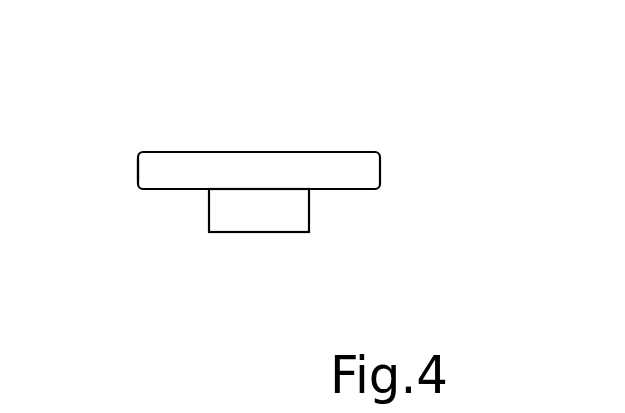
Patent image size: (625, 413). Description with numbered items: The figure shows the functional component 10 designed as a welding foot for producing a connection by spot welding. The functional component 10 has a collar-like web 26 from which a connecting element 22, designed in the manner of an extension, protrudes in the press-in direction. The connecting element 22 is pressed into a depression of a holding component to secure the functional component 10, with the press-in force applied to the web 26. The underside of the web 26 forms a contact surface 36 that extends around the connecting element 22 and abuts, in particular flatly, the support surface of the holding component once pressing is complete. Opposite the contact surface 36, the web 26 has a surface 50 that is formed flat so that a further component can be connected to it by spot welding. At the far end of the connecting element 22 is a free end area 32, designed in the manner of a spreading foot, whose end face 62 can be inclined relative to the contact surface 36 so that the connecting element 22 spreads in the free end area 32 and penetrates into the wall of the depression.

The functional component 10 is at (162, 116).
The surface 50 is at (287, 152).
The collar-like web 26 is at (157, 167).
The contact surface 36 is at (177, 190).
The connecting element 22 is at (300, 212).
The end face 62 is at (230, 233).
The free end area 32 is at (281, 218).